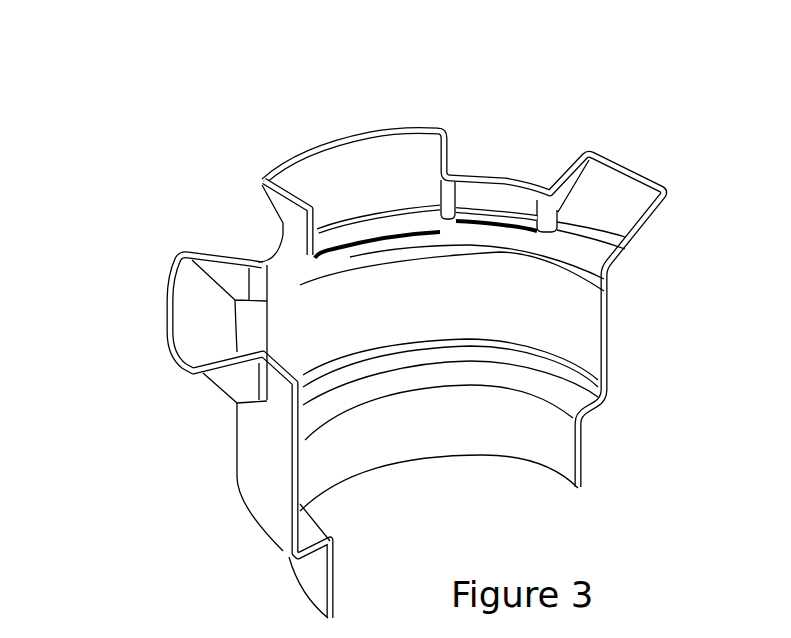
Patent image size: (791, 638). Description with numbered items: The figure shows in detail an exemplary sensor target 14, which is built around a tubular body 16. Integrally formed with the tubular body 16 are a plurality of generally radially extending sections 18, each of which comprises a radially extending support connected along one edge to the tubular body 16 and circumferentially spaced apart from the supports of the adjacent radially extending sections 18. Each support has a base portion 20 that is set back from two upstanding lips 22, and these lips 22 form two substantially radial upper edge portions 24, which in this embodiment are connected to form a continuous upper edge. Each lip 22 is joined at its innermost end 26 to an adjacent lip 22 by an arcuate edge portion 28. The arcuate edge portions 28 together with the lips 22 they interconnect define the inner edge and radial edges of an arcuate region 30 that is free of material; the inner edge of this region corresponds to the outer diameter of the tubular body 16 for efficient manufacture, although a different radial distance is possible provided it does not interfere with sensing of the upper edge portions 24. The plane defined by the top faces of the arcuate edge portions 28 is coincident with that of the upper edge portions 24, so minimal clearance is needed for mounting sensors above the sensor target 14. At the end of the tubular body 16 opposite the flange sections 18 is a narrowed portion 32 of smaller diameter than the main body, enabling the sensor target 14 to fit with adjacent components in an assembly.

The sensor target 14 is at (347, 308).
The tubular body 16 is at (516, 368).
The radially extending section 18 is at (377, 319).
The base portion 20 is at (403, 227).
The upstanding lip 22 is at (452, 164).
The upper edge portion 24 is at (410, 151).
The innermost end 26 is at (430, 350).
The arcuate edge portion 28 is at (633, 252).
The arcuate region 30 is at (216, 375).
The narrowed portion 32 is at (510, 463).